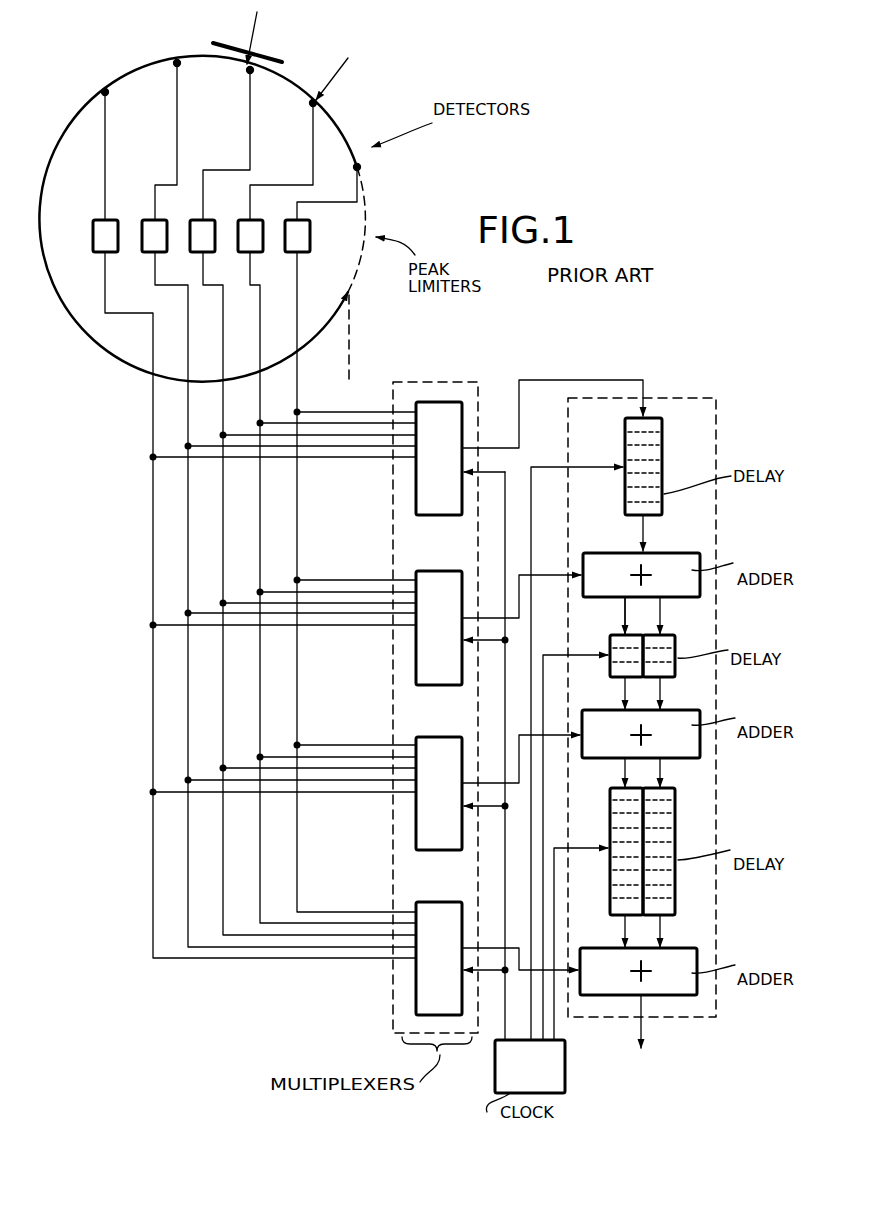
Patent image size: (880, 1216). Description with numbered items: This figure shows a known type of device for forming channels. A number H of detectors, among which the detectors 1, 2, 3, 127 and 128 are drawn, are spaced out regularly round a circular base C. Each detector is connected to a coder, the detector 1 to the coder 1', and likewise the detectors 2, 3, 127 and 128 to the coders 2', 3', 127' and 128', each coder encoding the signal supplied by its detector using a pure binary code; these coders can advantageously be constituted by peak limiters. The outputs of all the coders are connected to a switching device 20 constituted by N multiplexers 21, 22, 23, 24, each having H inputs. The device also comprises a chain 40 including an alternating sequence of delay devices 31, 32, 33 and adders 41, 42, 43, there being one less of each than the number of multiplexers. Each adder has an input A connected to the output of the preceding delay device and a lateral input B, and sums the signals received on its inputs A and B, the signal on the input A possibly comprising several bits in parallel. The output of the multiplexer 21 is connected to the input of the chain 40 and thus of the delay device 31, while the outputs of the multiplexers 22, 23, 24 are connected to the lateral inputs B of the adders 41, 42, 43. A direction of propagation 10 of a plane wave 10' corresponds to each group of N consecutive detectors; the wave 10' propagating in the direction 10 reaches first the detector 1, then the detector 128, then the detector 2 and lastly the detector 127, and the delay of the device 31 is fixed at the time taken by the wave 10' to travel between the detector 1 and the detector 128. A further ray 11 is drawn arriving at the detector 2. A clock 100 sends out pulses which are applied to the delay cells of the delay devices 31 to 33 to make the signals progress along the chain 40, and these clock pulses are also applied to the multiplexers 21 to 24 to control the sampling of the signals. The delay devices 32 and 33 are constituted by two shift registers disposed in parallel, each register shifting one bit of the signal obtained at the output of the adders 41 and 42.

The circular base C is at (138, 78).
The direction of propagation 10 is at (286, 37).
The plane wave 10' is at (230, 31).
The light beam 11 is at (347, 62).
The detector 1 is at (244, 144).
The detector 2 is at (315, 160).
The detector 3 is at (353, 189).
The detector 127 is at (141, 155).
The detector 128 is at (201, 140).
The coder 1' is at (218, 216).
The coder 2' is at (262, 216).
The coder 3' is at (322, 238).
The coder 127' is at (131, 207).
The coder 128' is at (190, 194).
The switching device 20 is at (457, 383).
The multiplexer 21 is at (442, 418).
The multiplexer 22 is at (442, 588).
The multiplexer 23 is at (442, 755).
The multiplexer 24 is at (442, 918).
The chain 40 is at (678, 398).
The delay device 31 is at (662, 480).
The delay device 32 is at (676, 650).
The delay device 33 is at (676, 850).
The adder 41 is at (666, 567).
The adder 42 is at (666, 725).
The adder 43 is at (670, 963).
The adder input A is at (640, 550).
The lateral input B is at (582, 575).
The clock 100 is at (548, 1070).